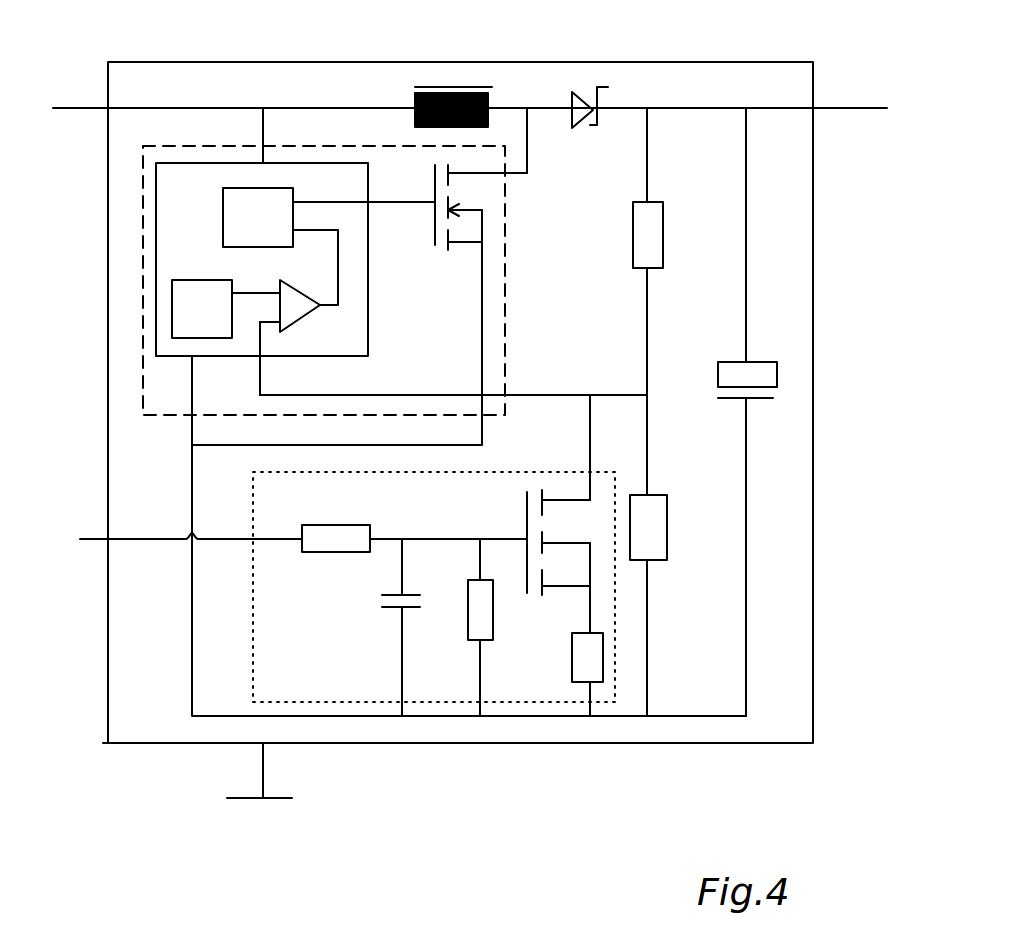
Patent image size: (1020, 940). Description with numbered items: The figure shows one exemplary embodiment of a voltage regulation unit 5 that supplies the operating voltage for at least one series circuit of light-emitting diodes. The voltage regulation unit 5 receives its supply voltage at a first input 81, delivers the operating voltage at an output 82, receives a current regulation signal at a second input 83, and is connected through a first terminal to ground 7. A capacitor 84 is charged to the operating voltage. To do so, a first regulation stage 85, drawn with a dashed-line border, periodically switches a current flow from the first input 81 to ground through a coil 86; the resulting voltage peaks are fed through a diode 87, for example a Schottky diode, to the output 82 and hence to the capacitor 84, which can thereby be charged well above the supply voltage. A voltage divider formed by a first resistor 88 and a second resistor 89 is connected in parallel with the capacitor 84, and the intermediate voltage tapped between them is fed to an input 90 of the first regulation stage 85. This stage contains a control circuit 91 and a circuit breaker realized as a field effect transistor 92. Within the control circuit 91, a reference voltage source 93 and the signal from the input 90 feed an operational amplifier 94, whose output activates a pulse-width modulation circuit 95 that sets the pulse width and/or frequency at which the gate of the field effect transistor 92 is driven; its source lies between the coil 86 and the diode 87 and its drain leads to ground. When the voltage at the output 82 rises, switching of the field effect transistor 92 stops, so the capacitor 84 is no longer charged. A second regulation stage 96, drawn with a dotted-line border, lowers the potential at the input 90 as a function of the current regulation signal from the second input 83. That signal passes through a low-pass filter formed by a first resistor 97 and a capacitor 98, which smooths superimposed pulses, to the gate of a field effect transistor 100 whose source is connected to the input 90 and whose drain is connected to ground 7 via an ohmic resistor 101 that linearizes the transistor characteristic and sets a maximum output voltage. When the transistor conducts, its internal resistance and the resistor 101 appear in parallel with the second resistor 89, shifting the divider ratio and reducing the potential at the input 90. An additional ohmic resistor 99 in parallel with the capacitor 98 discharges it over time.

The voltage regulation unit 5 is at (574, 798).
The ground 7 is at (278, 803).
The first input 81 is at (78, 107).
The output 82 is at (832, 110).
The second input 83 is at (90, 539).
The capacitor 84 is at (777, 372).
The first regulation stage 85 is at (143, 308).
The coil 86 is at (455, 88).
The diode 87 is at (590, 88).
The first resistor 88 is at (633, 236).
The second resistor 89 is at (667, 522).
The input 90 is at (505, 393).
The control circuit 91 is at (157, 232).
The field effect transistor 92 is at (490, 205).
The reference voltage source 93 is at (202, 309).
The operational amplifier 94 is at (300, 283).
The pulse-width modulation circuit 95 is at (223, 205).
The second regulation stage 96 is at (513, 700).
The first resistor 97 is at (340, 525).
The capacitor 98 is at (390, 612).
The ohmic resistor 99 is at (468, 620).
The field effect transistor 100 is at (598, 572).
The ohmic resistor 101 is at (572, 688).